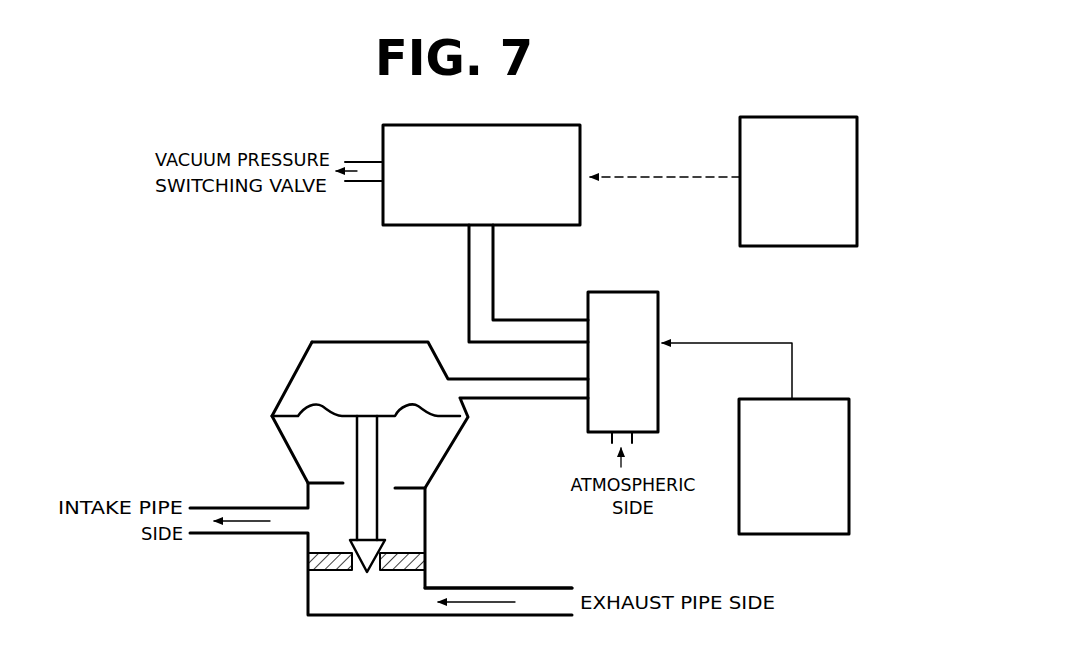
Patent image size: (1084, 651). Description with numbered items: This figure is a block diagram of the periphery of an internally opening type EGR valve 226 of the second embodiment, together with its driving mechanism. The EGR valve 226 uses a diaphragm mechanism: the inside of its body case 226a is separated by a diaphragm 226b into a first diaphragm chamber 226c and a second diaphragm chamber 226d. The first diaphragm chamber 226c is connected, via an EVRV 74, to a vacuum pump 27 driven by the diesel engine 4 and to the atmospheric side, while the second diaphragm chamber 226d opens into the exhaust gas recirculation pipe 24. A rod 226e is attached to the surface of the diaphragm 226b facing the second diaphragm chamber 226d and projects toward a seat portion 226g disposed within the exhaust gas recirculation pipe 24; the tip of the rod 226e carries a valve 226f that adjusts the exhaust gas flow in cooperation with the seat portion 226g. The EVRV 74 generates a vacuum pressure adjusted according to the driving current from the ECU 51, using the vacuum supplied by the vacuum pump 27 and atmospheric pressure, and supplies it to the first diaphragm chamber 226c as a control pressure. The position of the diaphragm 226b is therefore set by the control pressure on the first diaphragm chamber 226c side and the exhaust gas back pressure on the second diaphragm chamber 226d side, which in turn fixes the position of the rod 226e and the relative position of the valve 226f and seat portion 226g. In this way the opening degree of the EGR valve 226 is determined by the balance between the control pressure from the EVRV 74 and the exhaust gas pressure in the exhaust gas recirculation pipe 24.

The vacuum pump 27 is at (583, 148).
The diesel engine 4 is at (857, 167).
The EVRV 74 is at (640, 292).
The ECU 51 is at (827, 399).
The EGR valve 226 is at (386, 441).
The body case 226a is at (292, 378).
The diaphragm 226b is at (347, 416).
The first diaphragm chamber 226c is at (404, 342).
The second diaphragm chamber 226d is at (293, 461).
The rod 226e is at (370, 442).
The valve 226f is at (374, 547).
The seat portion 226g is at (324, 566).
The exhaust gas recirculation pipe 24 is at (552, 588).